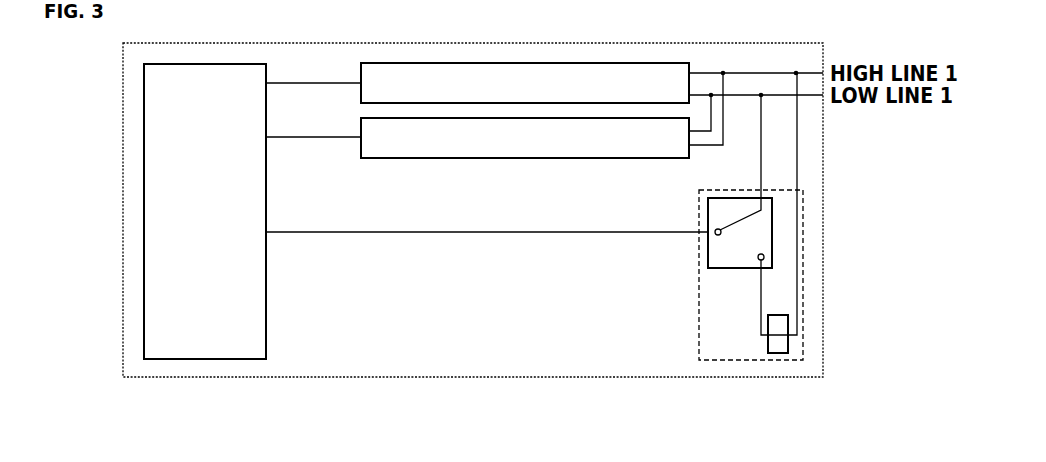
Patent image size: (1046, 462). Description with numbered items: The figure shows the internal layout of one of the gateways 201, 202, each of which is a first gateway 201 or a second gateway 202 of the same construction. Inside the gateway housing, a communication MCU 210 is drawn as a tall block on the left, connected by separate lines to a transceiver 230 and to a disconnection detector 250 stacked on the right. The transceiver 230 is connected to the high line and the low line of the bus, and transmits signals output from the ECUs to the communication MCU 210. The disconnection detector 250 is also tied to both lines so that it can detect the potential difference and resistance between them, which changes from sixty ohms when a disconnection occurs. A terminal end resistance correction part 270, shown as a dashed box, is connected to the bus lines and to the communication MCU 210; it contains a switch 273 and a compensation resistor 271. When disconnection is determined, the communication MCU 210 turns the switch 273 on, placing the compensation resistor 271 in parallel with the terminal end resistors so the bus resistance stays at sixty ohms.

The first gateway 201 is at (473, 240).
The second gateway 202 is at (528, 377).
The communication main control unit (MCU) 210 is at (204, 359).
The transceiver 230 is at (362, 67).
The disconnection detector 250 is at (362, 154).
The terminal end resistance correction part 270 is at (804, 283).
The compensation resistor 271 is at (795, 352).
The switch 273 is at (788, 225).